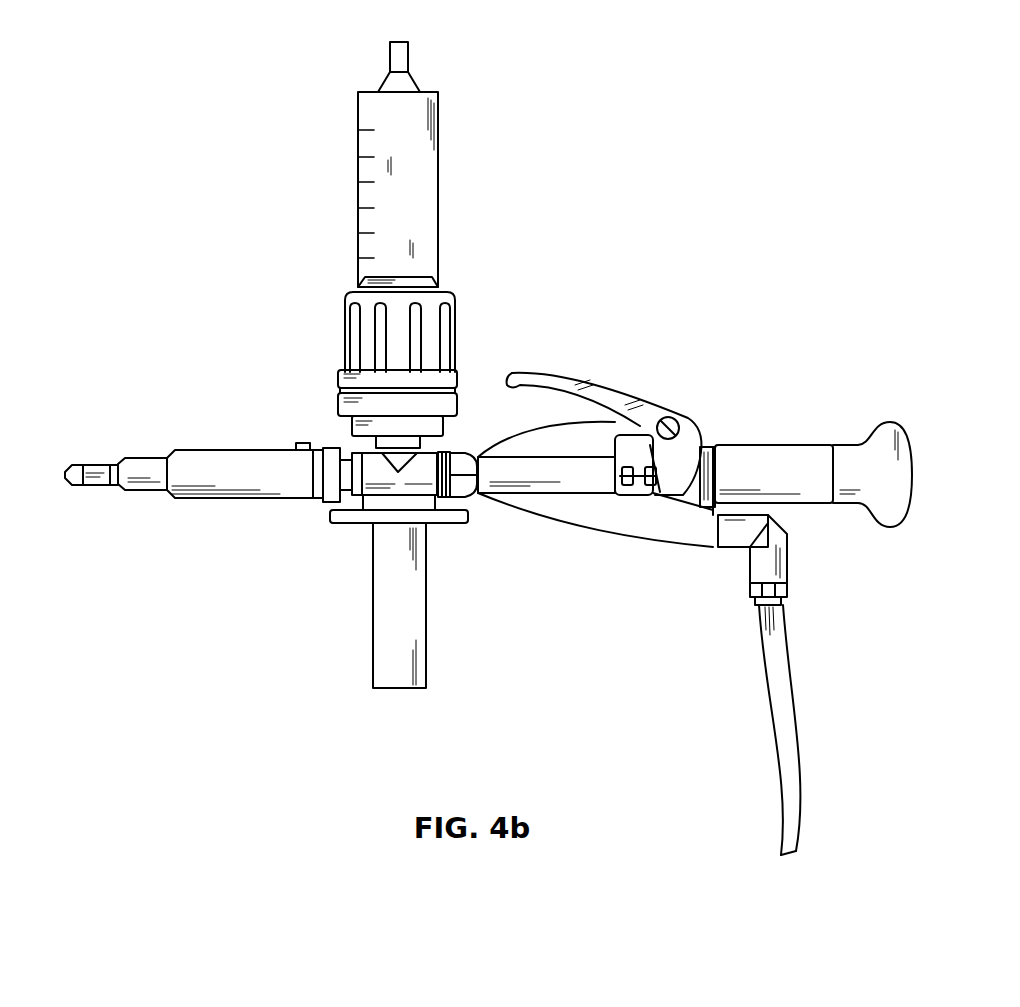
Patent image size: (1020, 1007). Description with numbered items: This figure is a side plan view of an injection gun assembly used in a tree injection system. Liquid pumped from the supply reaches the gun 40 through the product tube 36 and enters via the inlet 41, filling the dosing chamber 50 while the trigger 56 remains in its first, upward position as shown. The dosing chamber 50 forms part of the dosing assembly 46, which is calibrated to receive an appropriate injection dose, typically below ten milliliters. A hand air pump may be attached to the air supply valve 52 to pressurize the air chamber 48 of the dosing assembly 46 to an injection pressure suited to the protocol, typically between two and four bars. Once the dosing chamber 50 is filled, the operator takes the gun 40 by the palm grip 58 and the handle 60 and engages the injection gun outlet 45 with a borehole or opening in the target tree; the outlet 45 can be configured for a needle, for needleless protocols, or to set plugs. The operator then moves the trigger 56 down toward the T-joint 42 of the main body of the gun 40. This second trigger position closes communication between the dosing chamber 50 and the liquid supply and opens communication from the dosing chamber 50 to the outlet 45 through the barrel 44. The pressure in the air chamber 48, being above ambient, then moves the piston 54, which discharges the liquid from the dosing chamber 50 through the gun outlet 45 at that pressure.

The product tube 36 is at (780, 760).
The gun 40 is at (617, 318).
The inlet 41 is at (745, 597).
The T-joint 42 is at (412, 473).
The barrel 44 is at (272, 480).
The injection gun outlet 45 is at (65, 478).
The dosing assembly 46 is at (290, 190).
The air chamber 48 is at (427, 178).
The dosing chamber 50 is at (367, 345).
The air supply valve 52 is at (390, 45).
The piston 54 is at (430, 288).
The trigger 56 is at (615, 390).
The palm grip 58 is at (890, 518).
The handle 60 is at (393, 678).